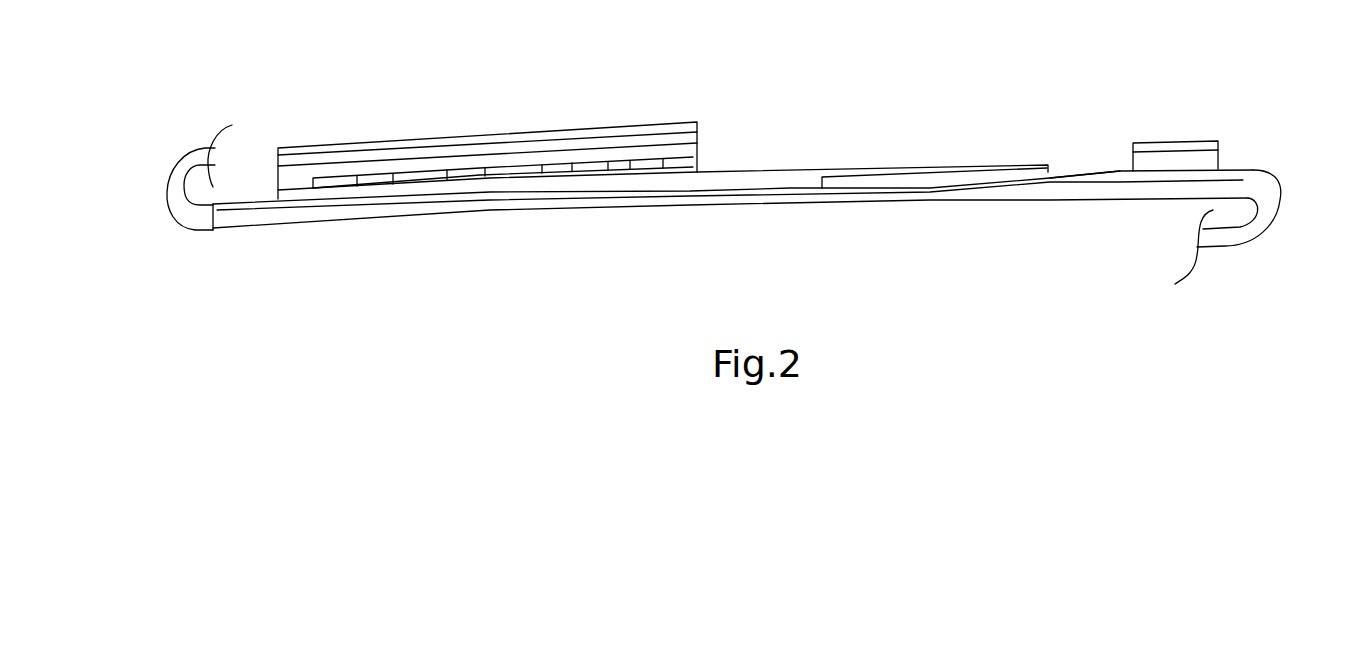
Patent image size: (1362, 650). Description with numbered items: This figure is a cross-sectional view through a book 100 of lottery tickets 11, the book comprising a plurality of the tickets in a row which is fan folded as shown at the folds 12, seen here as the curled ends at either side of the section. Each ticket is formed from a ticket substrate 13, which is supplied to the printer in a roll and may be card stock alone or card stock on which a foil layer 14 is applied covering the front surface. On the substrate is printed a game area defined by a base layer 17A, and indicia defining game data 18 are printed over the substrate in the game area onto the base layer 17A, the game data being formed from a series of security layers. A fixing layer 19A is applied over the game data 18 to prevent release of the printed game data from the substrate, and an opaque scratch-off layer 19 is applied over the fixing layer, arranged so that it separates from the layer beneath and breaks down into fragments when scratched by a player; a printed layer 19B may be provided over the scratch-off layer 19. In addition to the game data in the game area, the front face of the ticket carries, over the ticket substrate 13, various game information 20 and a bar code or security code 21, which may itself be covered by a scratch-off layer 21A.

The book 100 is at (1035, 291).
The lottery ticket 11 is at (921, 194).
The fan fold 12 is at (1258, 290).
The ticket substrate 13 is at (407, 203).
The foil layer 14 is at (1080, 174).
The base layer 17A is at (458, 185).
The game data 18 is at (523, 173).
The opaque scratch-off layer 19 is at (472, 153).
The fixing layer 19A is at (371, 175).
The printed layer 19B is at (585, 137).
The game information 20 is at (936, 172).
The bar code or security code 21 is at (1182, 157).
The scratch-off layer 21A is at (1202, 143).